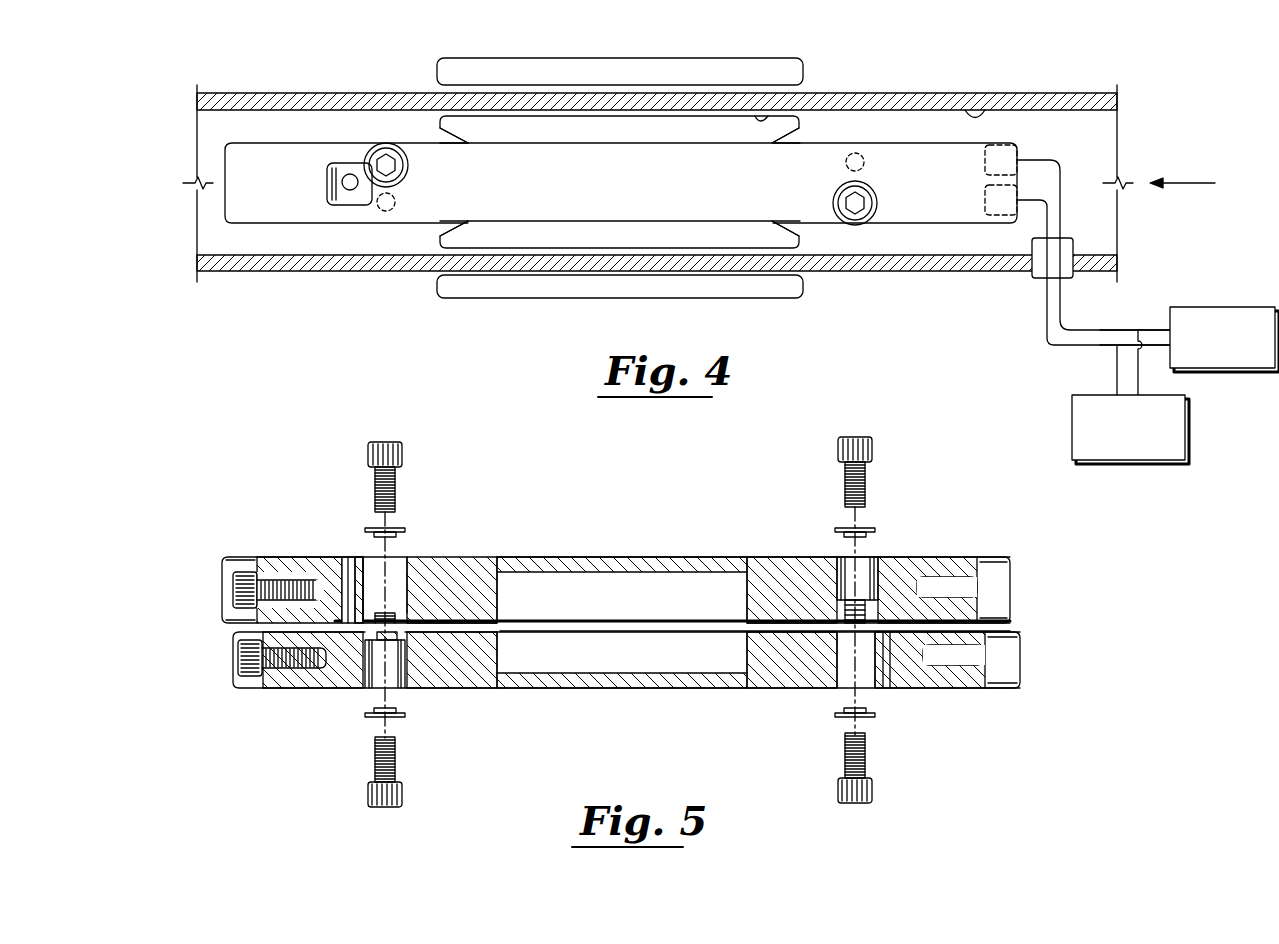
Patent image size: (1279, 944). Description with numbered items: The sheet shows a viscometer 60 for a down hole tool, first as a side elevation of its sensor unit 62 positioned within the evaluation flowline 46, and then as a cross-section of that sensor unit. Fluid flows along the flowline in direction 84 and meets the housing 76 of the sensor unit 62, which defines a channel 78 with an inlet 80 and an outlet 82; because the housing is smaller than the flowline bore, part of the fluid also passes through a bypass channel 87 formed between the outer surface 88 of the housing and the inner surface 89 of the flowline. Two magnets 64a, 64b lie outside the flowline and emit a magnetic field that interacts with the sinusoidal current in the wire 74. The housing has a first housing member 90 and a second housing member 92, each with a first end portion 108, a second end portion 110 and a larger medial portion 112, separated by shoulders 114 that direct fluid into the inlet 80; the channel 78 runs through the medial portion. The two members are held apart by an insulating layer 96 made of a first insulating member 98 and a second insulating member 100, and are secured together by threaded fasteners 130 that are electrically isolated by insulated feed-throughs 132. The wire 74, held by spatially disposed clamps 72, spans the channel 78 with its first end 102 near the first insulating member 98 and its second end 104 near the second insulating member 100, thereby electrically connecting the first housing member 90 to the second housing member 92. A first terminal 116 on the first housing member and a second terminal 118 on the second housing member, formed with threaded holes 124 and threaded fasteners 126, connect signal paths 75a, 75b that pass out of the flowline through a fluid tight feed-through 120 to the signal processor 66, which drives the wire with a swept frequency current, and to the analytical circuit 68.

In FIG. 4, the evaluation flowline 46 is at (1066, 93).
In FIG. 4, the viscometer 60 is at (886, 68).
In FIG. 4, the sensor unit 62 is at (341, 174).
In FIG. 4, the magnet 64a is at (620, 58).
In FIG. 4, the magnet 64b is at (580, 298).
In FIG. 4, the signal processor 66 is at (1128, 460).
In FIG. 4, the analytical circuit 68 is at (1235, 307).
In FIG. 4, the clamp 72 is at (350, 165).
In FIG. 5, the wire 74 is at (585, 619).
In FIG. 4, the signal path 75a is at (1135, 328).
In FIG. 4, the signal path 75b is at (1082, 348).
In FIG. 4, the housing 76 is at (400, 212).
In FIG. 5, the housing 76 is at (455, 556).
In FIG. 5, the channel 78 is at (537, 665).
In FIG. 4, the inlet 80 is at (803, 125).
In FIG. 4, the outlet 82 is at (440, 125).
In FIG. 4, the direction 84 is at (1183, 182).
In FIG. 4, the channel 87 is at (763, 113).
In FIG. 4, the outer surface 88 is at (483, 115).
In FIG. 4, the inner surface 89 is at (975, 118).
In FIG. 5, the first housing member 90 is at (283, 556).
In FIG. 5, the second housing member 92 is at (300, 690).
In FIG. 5, the insulating layer 96 is at (772, 628).
In FIG. 5, the first insulating member 98 is at (437, 632).
In FIG. 5, the second insulating member 100 is at (780, 636).
In FIG. 5, the first end 102 is at (505, 620).
In FIG. 5, the second end 104 is at (735, 618).
In FIG. 4, the first end portion 108 is at (940, 210).
In FIG. 5, the first end portion 108 is at (945, 690).
In FIG. 4, the second end portion 110 is at (280, 215).
In FIG. 5, the second end portion 110 is at (298, 556).
In FIG. 4, the medial portion 112 is at (495, 248).
In FIG. 5, the medial portion 112 is at (570, 556).
In FIG. 4, the shoulder 114 is at (458, 228).
In FIG. 4, the first terminal 116 is at (1021, 155).
In FIG. 5, the first terminal 116 is at (212, 571).
In FIG. 4, the second terminal 118 is at (1024, 204).
In FIG. 5, the second terminal 118 is at (213, 674).
In FIG. 4, the feed-through 120 is at (1068, 238).
In FIG. 5, the threaded hole 124 is at (318, 590).
In FIG. 5, the threaded fastener 126 is at (245, 590).
In FIG. 5, the threaded fastener 130 is at (403, 452).
In FIG. 5, the electrically insulated feed-through 132 is at (405, 530).